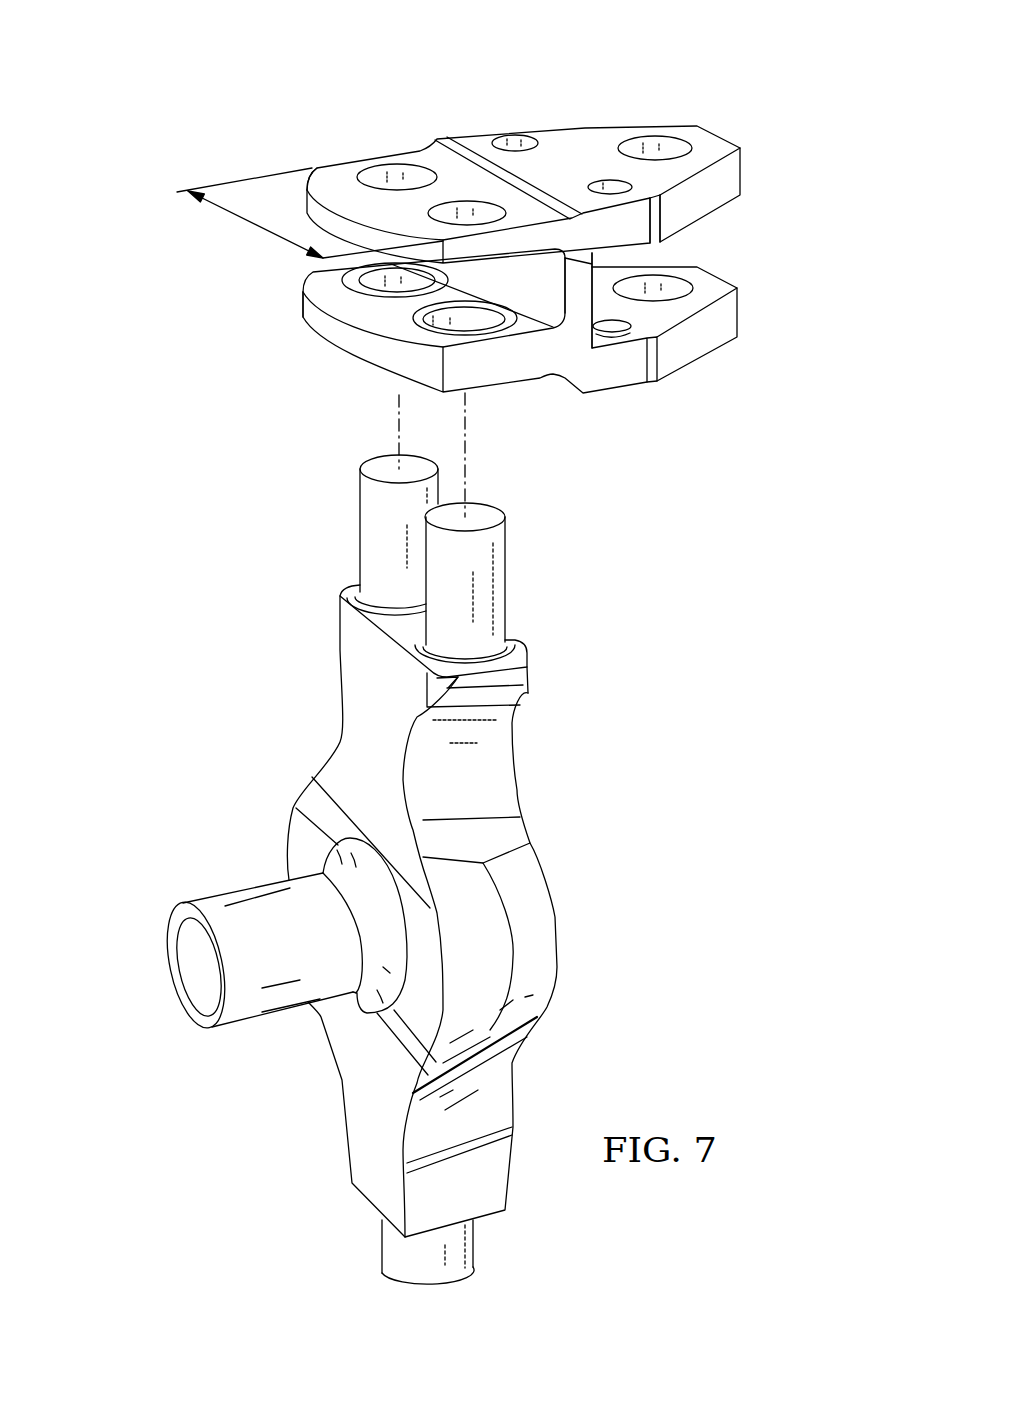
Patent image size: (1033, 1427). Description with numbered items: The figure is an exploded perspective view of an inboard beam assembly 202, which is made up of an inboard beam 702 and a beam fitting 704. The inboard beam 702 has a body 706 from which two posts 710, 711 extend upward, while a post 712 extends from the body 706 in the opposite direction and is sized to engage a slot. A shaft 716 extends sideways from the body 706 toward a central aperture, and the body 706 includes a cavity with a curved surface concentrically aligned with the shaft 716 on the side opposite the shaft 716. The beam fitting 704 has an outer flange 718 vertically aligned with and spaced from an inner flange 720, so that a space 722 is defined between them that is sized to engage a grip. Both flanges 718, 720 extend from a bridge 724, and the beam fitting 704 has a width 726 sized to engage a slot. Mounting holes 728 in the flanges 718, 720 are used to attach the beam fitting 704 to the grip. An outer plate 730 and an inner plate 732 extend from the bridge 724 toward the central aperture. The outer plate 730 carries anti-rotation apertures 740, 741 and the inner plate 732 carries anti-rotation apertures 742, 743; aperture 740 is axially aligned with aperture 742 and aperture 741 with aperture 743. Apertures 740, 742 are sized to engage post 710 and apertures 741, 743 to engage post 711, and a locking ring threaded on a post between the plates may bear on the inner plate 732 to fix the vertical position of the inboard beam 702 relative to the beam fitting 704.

The inboard beam assembly 202 is at (121, 96).
The inboard beam 702 is at (605, 819).
The beam fitting 704 is at (613, 79).
The body 706 is at (547, 963).
The post 710 is at (360, 528).
The post 711 is at (505, 578).
The post 712 is at (382, 1233).
The shaft 716 is at (242, 893).
The outer flange 718 is at (740, 170).
The inner flange 720 is at (738, 310).
The space 722 is at (738, 221).
The bridge 724 is at (577, 273).
The width 726 is at (250, 227).
The mounting holes 728 is at (510, 137).
The outer plate 730 is at (307, 200).
The inner plate 732 is at (303, 313).
The anti-rotation aperture 740 is at (370, 183).
The anti-rotation aperture 741 is at (450, 218).
The anti-rotation aperture 742 is at (377, 291).
The anti-rotation aperture 743 is at (433, 328).